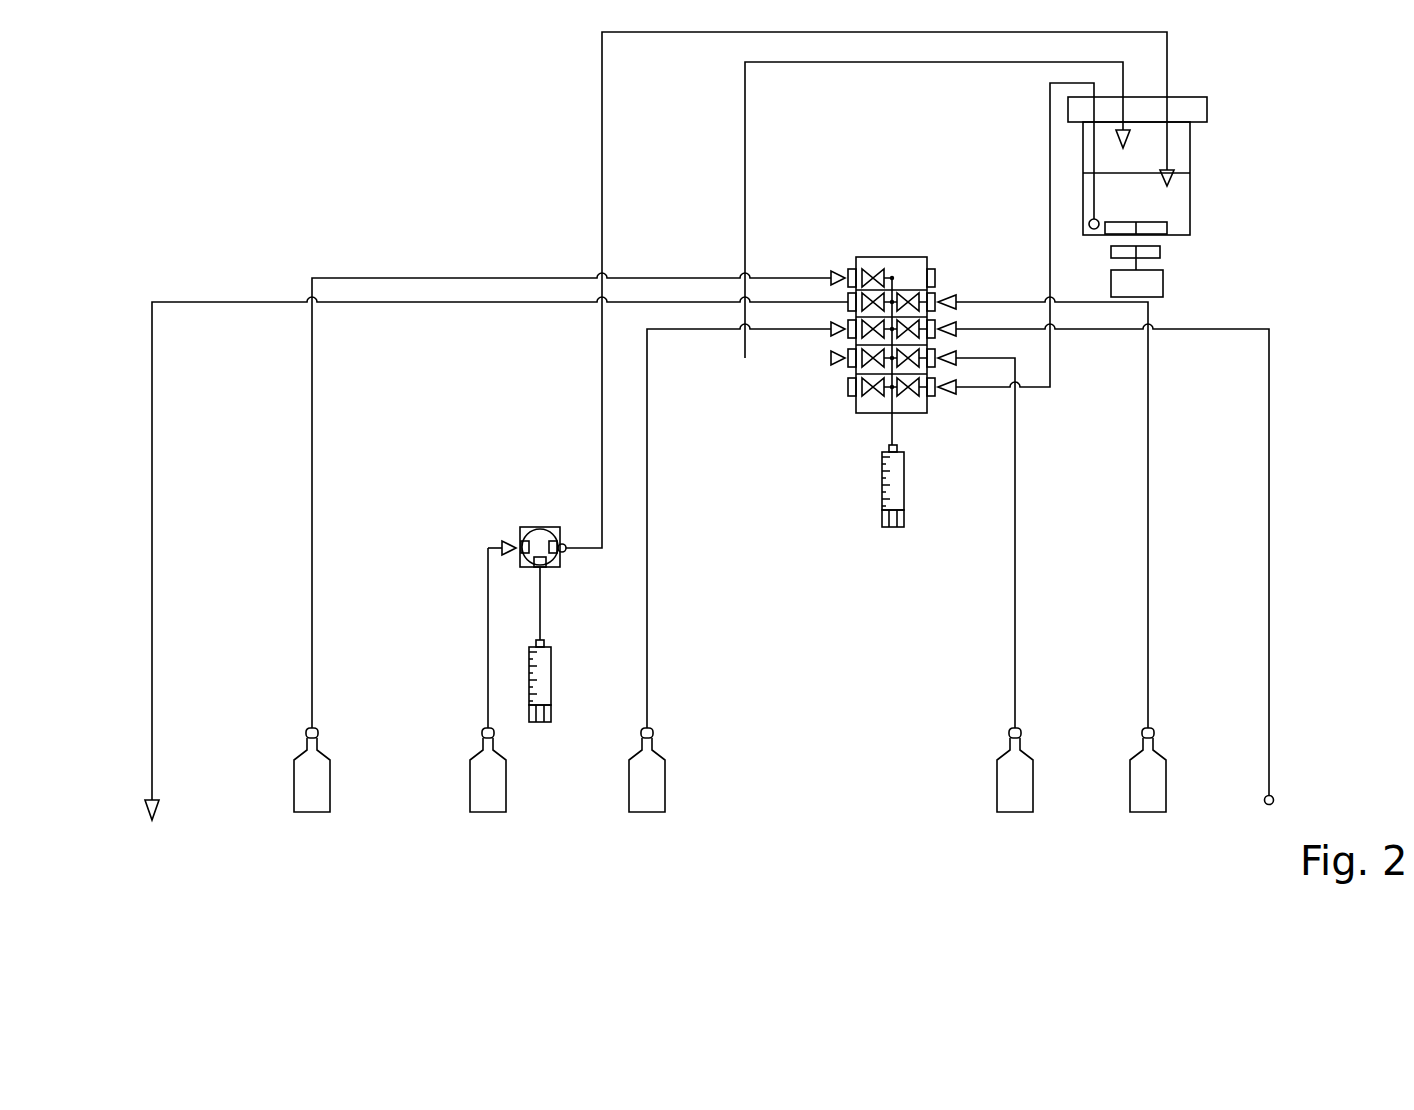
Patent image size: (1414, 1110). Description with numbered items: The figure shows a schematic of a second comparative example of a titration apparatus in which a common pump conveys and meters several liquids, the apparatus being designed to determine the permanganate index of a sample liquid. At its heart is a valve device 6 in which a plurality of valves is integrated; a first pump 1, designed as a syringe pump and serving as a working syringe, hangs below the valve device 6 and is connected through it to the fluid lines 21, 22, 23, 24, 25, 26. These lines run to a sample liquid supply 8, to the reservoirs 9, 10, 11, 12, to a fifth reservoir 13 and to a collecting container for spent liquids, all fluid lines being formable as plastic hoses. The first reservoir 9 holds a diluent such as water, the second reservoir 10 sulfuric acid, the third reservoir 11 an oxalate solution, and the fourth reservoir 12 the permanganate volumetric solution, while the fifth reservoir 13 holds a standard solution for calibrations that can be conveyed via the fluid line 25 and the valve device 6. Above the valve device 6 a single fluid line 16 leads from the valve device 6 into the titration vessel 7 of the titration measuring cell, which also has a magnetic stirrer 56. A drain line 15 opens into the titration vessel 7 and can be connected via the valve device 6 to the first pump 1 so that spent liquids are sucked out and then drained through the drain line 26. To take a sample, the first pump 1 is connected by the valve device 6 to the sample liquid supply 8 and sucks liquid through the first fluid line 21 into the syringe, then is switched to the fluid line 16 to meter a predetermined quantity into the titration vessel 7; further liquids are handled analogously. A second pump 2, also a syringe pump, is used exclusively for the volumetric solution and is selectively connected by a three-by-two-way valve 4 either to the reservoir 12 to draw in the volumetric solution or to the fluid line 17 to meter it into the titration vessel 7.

The first pump 1 is at (893, 527).
The second pump 2 is at (540, 722).
The 3/2-way valve 4 is at (540, 527).
The valve device 6 is at (905, 257).
The titration vessel 7 is at (1180, 132).
The sample liquid supply 8 is at (1269, 737).
The first reservoir 9 is at (1152, 798).
The second reservoir 10 is at (1019, 798).
The third reservoir 11 is at (651, 798).
The fourth reservoir 12 is at (492, 798).
The fifth reservoir 13 is at (316, 798).
The drain line 15 is at (1094, 143).
The fluid line 16 is at (1123, 84).
The fluid line 17 is at (1167, 182).
The first fluid line 21 is at (1272, 560).
The fluid line 22 is at (652, 560).
The fluid line 23 is at (1020, 560).
The fluid line 24 is at (1152, 560).
The fluid line 25 is at (312, 543).
The drain line 26 is at (152, 543).
The magnetic stirrer 56 is at (1183, 262).